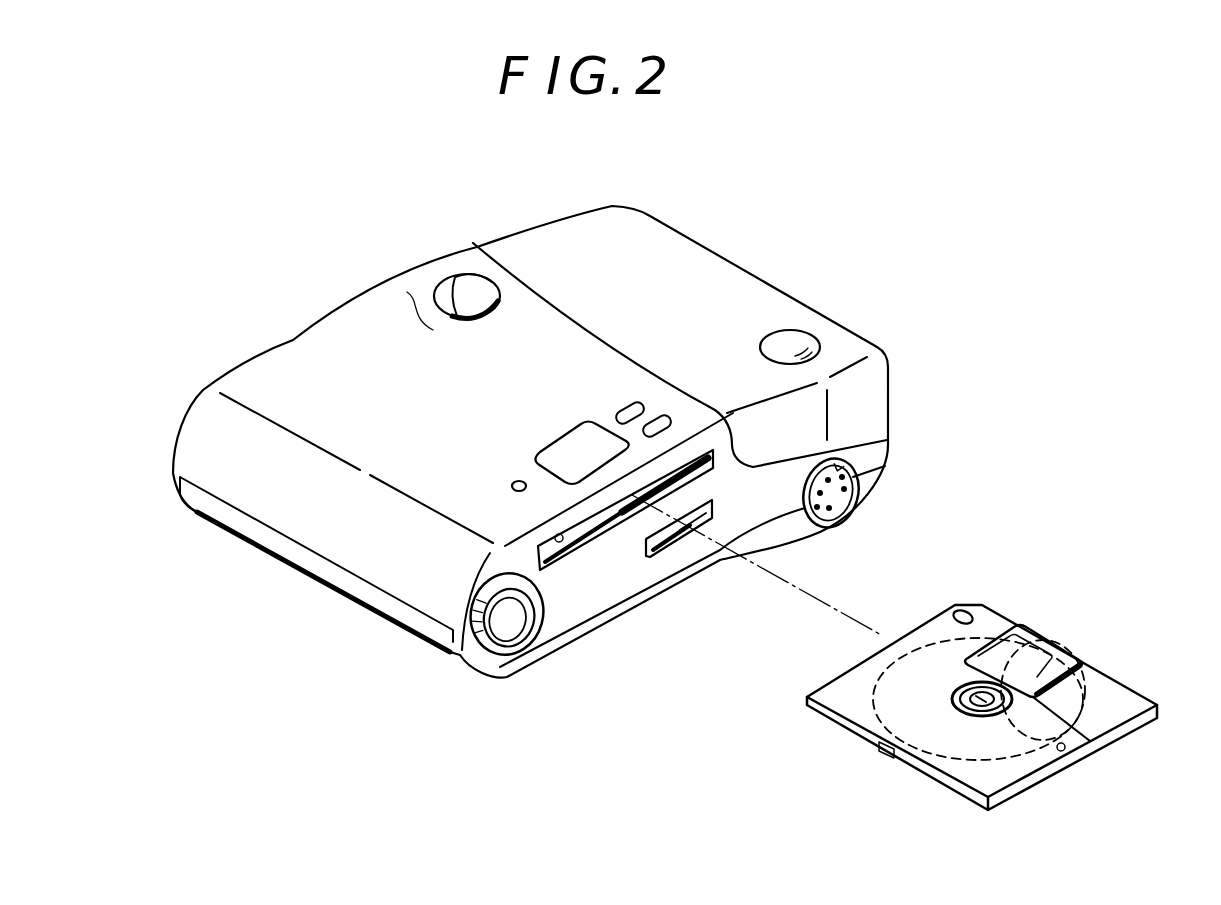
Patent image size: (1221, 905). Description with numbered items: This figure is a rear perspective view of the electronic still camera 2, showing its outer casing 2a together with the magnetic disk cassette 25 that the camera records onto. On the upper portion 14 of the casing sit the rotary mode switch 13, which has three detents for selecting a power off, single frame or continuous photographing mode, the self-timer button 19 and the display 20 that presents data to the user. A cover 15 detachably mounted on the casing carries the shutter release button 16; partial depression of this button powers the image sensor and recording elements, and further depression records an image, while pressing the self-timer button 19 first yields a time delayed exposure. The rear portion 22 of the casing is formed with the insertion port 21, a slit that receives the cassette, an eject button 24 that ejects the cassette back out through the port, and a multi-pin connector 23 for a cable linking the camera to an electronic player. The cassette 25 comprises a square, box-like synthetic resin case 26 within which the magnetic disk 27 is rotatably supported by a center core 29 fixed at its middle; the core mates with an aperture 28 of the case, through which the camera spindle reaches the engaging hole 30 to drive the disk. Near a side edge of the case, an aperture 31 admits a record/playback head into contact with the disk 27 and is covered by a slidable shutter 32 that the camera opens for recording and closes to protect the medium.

The electronic still camera 2 is at (815, 247).
The outer casing 2a is at (293, 350).
The mode switch 13 is at (457, 280).
The upper portion 14 is at (378, 355).
The cover 15 is at (670, 255).
The shutter release button 16 is at (797, 337).
The self-timer button 19 is at (516, 481).
The display 20 is at (573, 443).
The insertion port 21 is at (555, 537).
The rear portion 22 is at (590, 593).
The connector 23 is at (833, 498).
The eject button 24 is at (668, 540).
The magnetic disk cassette 25 is at (1082, 633).
The case 26 is at (845, 686).
The magnetic disk 27 is at (830, 722).
The aperture 28 is at (965, 687).
The center core 29 is at (997, 708).
The engaging hole 30 is at (961, 701).
The aperture 31 is at (1062, 655).
The shutter 32 is at (1020, 637).